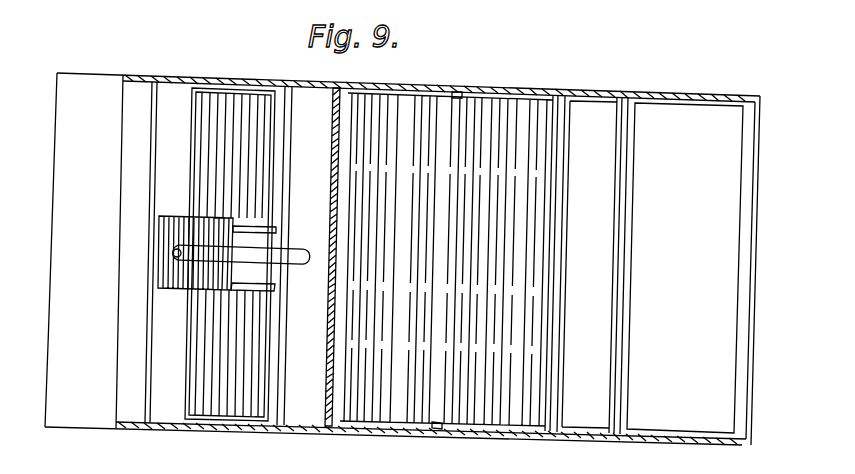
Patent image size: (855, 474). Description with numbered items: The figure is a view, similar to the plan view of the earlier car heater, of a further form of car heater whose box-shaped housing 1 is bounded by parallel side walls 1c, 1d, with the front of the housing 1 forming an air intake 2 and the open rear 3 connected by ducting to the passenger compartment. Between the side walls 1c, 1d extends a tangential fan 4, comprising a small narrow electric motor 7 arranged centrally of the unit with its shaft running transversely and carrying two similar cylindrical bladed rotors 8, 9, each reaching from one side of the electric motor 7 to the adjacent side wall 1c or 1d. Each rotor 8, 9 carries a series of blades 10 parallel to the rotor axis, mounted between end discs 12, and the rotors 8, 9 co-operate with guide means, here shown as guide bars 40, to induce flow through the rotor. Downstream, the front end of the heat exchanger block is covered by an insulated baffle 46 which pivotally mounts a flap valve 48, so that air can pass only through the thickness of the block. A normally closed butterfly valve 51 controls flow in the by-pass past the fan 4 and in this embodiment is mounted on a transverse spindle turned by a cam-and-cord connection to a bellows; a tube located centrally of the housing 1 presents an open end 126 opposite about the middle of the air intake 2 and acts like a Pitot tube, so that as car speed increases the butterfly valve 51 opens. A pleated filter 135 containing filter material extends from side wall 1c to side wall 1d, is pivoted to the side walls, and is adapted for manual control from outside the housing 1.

The housing 1 is at (96, 72).
The side wall 1c is at (538, 93).
The side wall 1d is at (486, 431).
The air intake 2 is at (96, 255).
The open rear 3 is at (745, 258).
The tangential fan 4 is at (180, 292).
The electric motor 7 is at (240, 268).
The cylindrical bladed rotor 8 is at (236, 112).
The cylindrical bladed rotor 9 is at (211, 403).
The blades 10 is at (207, 137).
The end discs 12 is at (205, 86).
The guide bars 40 is at (232, 288).
The insulated baffle 46 is at (588, 113).
The flap valve 48 is at (683, 118).
The butterfly valve 51 is at (342, 412).
The open end 126 is at (293, 262).
The filter 135 is at (470, 118).